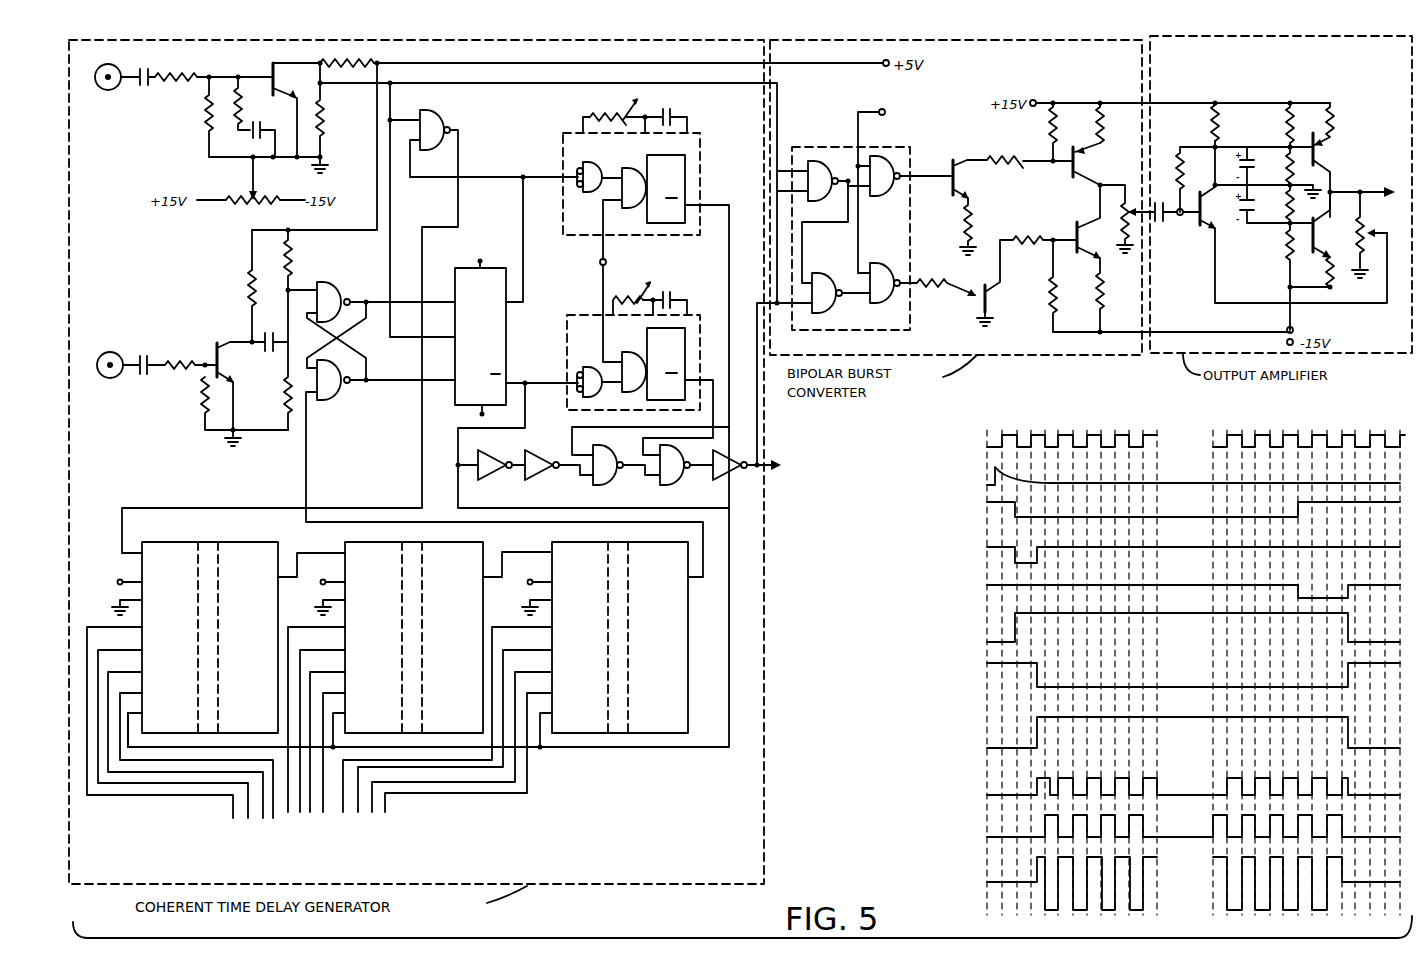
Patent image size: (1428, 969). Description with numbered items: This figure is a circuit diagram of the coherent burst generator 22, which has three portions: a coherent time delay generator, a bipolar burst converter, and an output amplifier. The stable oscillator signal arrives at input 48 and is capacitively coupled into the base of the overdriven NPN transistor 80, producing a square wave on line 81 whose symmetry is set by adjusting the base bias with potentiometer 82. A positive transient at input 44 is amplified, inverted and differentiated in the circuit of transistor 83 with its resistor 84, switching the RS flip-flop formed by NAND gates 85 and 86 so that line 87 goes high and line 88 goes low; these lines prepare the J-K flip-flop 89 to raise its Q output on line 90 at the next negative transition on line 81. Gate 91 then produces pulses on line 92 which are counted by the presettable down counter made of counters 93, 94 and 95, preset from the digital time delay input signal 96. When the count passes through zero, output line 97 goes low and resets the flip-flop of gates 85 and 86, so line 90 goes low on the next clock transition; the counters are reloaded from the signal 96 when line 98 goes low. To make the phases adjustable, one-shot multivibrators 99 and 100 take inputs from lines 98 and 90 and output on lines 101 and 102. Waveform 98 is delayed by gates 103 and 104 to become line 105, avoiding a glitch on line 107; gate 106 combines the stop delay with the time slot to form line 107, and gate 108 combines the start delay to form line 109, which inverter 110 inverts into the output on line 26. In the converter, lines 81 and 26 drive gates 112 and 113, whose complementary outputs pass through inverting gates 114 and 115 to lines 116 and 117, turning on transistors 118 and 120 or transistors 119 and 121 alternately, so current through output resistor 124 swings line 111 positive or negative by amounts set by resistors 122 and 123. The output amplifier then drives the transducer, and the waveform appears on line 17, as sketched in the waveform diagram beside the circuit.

The output line 17 is at (1369, 181).
The coherent burst generator 22 is at (824, 780).
The output line of coherent time delay generator 26 is at (778, 318).
The trigger input 44 is at (110, 378).
The oscillator input 48 is at (108, 90).
The NPN transistor 80 is at (303, 62).
The clock line 81 is at (463, 85).
The potentiometer 82 is at (245, 205).
The transistor 83 is at (227, 338).
The resistor 84 is at (300, 286).
The NAND gate 85 is at (340, 283).
The NAND gate 86 is at (333, 402).
The line 87 is at (403, 298).
The line 88 is at (388, 385).
The J-K flip-flop 89 is at (515, 318).
The Q output line 90 is at (444, 180).
The gate 91 is at (452, 125).
The count line 92 is at (458, 160).
The presettable down counter 93 is at (190, 538).
The presettable down counter 94 is at (483, 560).
The presettable down counter 95 is at (688, 640).
The digital time delay input signal 96 is at (285, 844).
The output line 97 is at (305, 472).
The line 98 is at (555, 382).
The one-shot multivibrator 99 is at (593, 312).
The one-shot multivibrator 100 is at (663, 237).
The line 101 is at (643, 440).
The line 102 is at (707, 202).
The gate 103 is at (495, 478).
The gate 104 is at (533, 477).
The line 105 is at (580, 478).
The gate 106 is at (609, 475).
The line 107 is at (648, 478).
The gate 108 is at (682, 475).
The line 109 is at (732, 478).
The inverter 110 is at (730, 478).
The output line of bipolar burst converter 111 is at (1155, 223).
The gate 112 is at (833, 160).
The gate 113 is at (830, 272).
The gate 114 is at (885, 155).
The gate 115 is at (885, 270).
The line 116 is at (928, 174).
The line 117 is at (918, 285).
The transistor 118 is at (965, 178).
The transistor 119 is at (990, 297).
The transistor 120 is at (1068, 178).
The transistor 121 is at (1075, 236).
The resistor 122 is at (1103, 128).
The current source control resistor 123 is at (1100, 298).
The output resistor 124 is at (1138, 200).